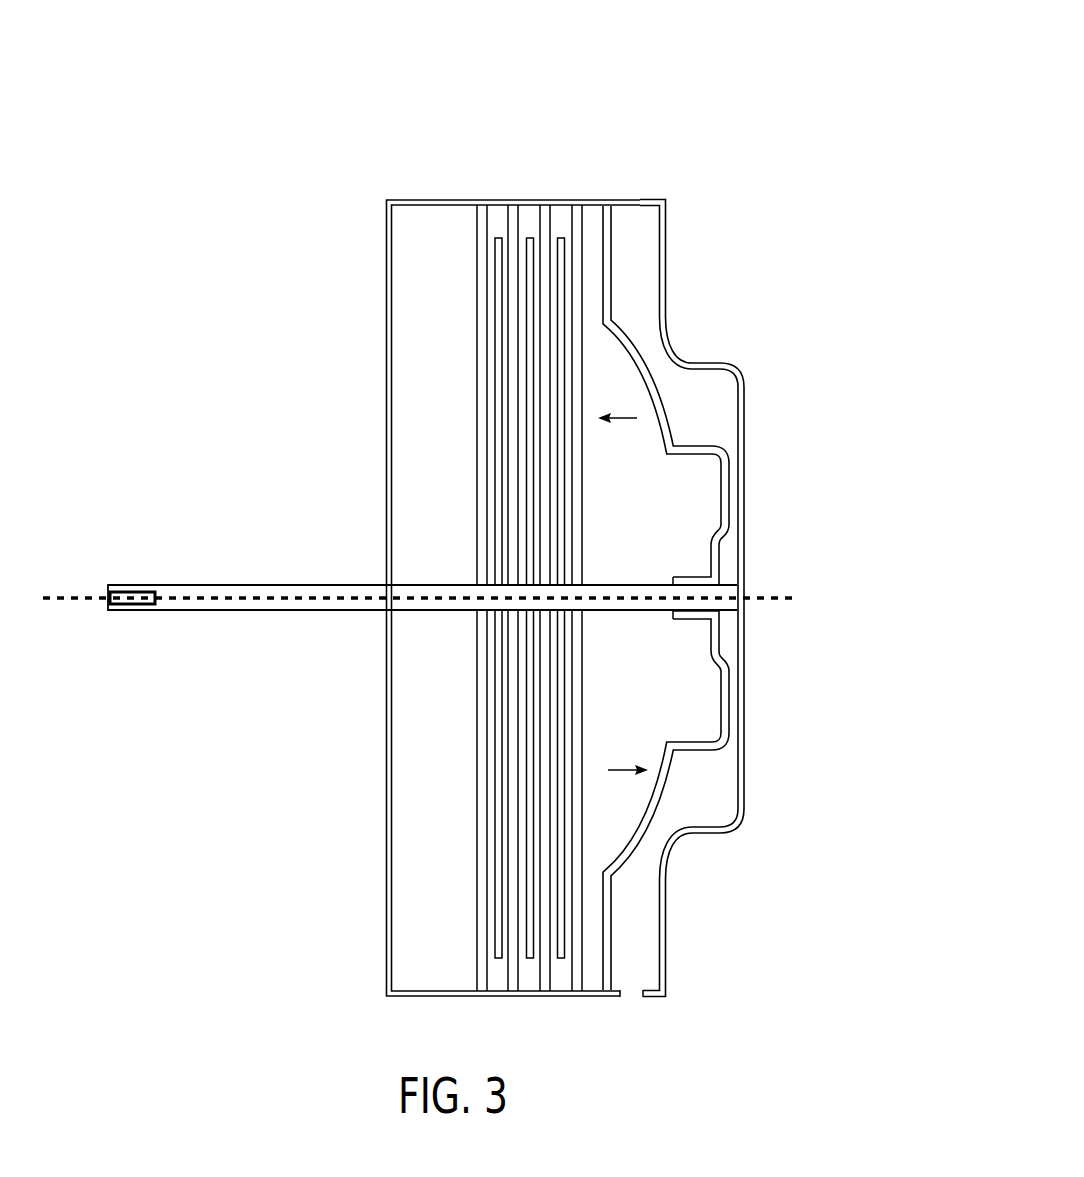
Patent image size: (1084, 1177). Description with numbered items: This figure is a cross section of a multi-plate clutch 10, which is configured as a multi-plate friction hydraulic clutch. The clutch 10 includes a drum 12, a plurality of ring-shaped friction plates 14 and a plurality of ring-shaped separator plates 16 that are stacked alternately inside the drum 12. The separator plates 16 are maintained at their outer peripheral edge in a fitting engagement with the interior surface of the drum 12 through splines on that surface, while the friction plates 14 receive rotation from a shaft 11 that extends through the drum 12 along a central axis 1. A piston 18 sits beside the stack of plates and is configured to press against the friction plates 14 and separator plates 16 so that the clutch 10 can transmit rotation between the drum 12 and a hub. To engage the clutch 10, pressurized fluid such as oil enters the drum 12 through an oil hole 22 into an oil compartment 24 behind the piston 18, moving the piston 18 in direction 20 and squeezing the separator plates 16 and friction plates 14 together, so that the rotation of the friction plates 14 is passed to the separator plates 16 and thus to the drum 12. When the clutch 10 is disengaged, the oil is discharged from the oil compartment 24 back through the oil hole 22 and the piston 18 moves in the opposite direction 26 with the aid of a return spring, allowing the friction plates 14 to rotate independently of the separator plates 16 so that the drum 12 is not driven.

The central axis 1 is at (80, 599).
The multi-plate clutch 10 is at (683, 90).
The shaft 11 is at (201, 611).
The drum 12 is at (427, 203).
The friction plates 14 is at (562, 295).
The separator plates 16 is at (578, 210).
The piston 18 is at (613, 288).
The direction 20 is at (619, 420).
The oil hole 22 is at (630, 1000).
The oil compartment 24 is at (722, 785).
The direction 26 is at (624, 768).